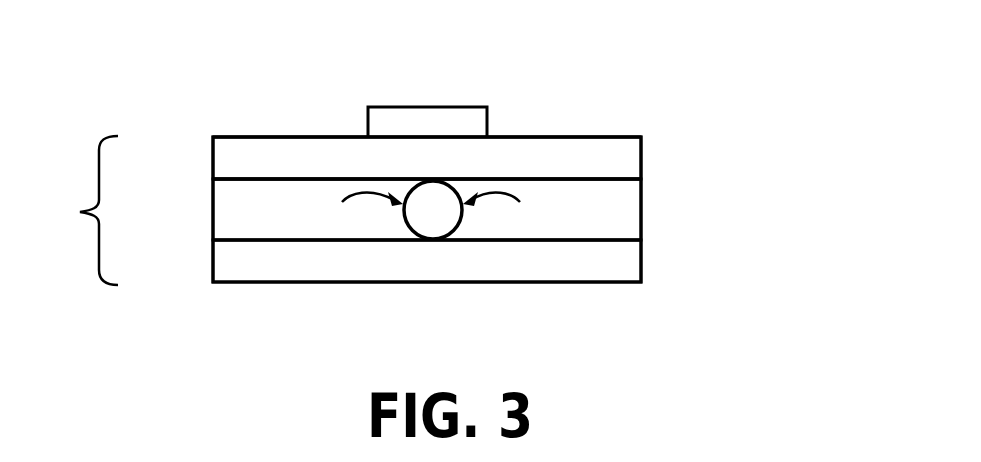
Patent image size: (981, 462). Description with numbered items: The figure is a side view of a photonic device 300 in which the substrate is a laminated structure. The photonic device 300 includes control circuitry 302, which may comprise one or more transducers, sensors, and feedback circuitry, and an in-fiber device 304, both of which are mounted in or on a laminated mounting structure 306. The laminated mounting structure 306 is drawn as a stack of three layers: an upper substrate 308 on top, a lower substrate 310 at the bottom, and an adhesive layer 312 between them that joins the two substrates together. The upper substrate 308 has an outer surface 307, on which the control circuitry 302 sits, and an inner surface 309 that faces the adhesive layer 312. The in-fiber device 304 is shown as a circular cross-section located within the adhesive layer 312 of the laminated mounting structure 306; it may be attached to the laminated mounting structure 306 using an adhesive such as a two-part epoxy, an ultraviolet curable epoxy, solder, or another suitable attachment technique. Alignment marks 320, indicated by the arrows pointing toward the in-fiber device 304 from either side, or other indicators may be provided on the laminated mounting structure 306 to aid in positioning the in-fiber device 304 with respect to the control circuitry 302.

The photonic device 300 is at (866, 326).
The control circuitry 302 is at (453, 118).
The in-fiber device 304 is at (427, 212).
The laminated mounting structure 306 is at (80, 212).
The outer surface 307 is at (598, 135).
The upper substrate 308 is at (628, 155).
The inner surface 309 is at (230, 180).
The lower substrate 310 is at (460, 255).
The adhesive layer 312 is at (628, 210).
The alignment marks 320 is at (432, 202).